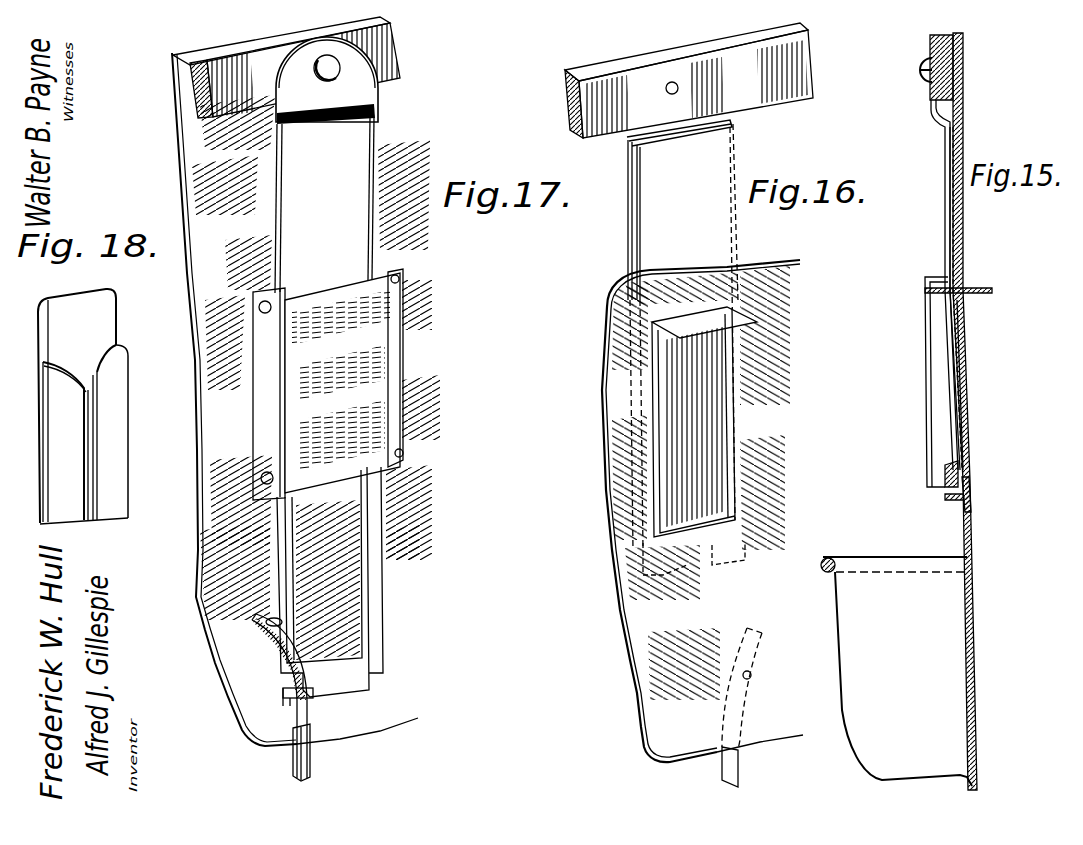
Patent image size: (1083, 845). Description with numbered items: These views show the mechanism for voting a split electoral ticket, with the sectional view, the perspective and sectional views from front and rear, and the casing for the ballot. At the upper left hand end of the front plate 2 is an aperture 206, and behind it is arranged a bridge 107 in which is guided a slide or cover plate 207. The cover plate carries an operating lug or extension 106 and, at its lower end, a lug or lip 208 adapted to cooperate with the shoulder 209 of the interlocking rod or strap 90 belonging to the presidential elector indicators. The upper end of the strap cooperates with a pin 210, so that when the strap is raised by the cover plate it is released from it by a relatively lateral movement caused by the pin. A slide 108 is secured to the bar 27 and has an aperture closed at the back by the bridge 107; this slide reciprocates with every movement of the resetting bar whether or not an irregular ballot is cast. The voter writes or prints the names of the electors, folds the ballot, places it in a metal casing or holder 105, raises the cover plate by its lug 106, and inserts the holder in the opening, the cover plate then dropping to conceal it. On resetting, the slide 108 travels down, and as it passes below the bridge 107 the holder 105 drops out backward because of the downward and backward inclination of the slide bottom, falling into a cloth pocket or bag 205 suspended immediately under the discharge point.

In FIG. 17, the front plate 2 is at (306, 399).
In FIG. 16, the front plate 2 is at (701, 511).
In FIG. 15, the front plate 2 is at (971, 411).
In FIG. 17, the bar 27 is at (402, 82).
In FIG. 16, the bar 27 is at (689, 80).
In FIG. 15, the bar 27 is at (933, 102).
In FIG. 17, the interlocking rod or strap 90 is at (313, 744).
In FIG. 16, the interlocking rod or strap 90 is at (735, 764).
In FIG. 18, the metal casing or holder 105 is at (118, 480).
In FIG. 16, the operating lug or extension 106 is at (757, 321).
In FIG. 15, the operating lug or extension 106 is at (987, 288).
In FIG. 17, the bridge 107 is at (383, 378).
In FIG. 16, the bridge 107 is at (693, 422).
In FIG. 15, the bridge 107 is at (925, 396).
In FIG. 17, the slide 108 is at (326, 165).
In FIG. 16, the slide 108 is at (630, 236).
In FIG. 15, the slide 108 is at (945, 223).
In FIG. 15, the cloth pocket or bag 205 is at (844, 726).
In FIG. 16, the aperture 206 is at (667, 497).
In FIG. 15, the aperture 206 is at (966, 437).
In FIG. 17, the slide or cover plate 207 is at (374, 594).
In FIG. 16, the slide or cover plate 207 is at (682, 320).
In FIG. 15, the slide or cover plate 207 is at (981, 298).
In FIG. 17, the lug or lip 208 is at (293, 698).
In FIG. 15, the lug or lip 208 is at (950, 502).
In FIG. 17, the shoulder 209 is at (318, 690).
In FIG. 17, the pin 210 is at (267, 624).
In FIG. 16, the pin 210 is at (751, 676).